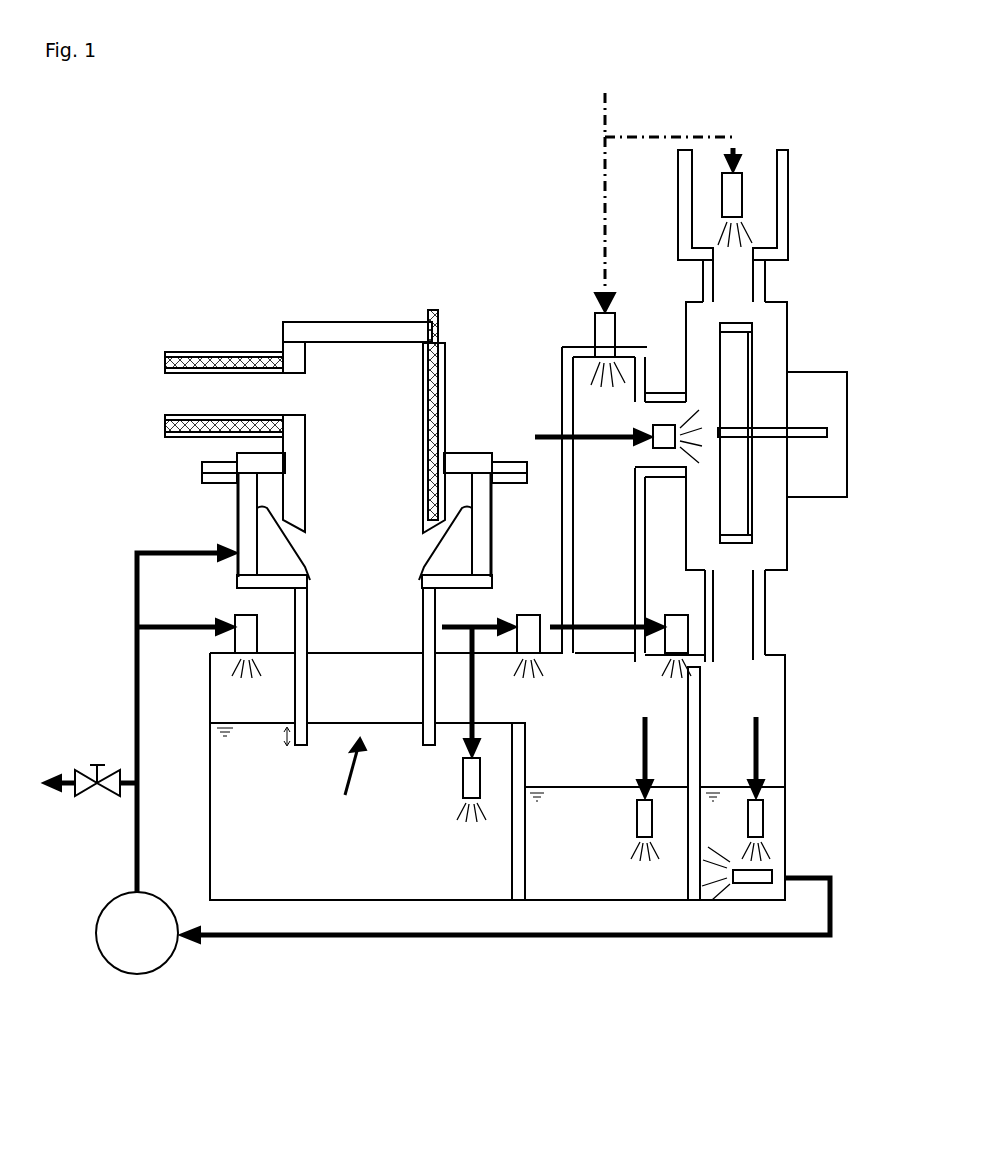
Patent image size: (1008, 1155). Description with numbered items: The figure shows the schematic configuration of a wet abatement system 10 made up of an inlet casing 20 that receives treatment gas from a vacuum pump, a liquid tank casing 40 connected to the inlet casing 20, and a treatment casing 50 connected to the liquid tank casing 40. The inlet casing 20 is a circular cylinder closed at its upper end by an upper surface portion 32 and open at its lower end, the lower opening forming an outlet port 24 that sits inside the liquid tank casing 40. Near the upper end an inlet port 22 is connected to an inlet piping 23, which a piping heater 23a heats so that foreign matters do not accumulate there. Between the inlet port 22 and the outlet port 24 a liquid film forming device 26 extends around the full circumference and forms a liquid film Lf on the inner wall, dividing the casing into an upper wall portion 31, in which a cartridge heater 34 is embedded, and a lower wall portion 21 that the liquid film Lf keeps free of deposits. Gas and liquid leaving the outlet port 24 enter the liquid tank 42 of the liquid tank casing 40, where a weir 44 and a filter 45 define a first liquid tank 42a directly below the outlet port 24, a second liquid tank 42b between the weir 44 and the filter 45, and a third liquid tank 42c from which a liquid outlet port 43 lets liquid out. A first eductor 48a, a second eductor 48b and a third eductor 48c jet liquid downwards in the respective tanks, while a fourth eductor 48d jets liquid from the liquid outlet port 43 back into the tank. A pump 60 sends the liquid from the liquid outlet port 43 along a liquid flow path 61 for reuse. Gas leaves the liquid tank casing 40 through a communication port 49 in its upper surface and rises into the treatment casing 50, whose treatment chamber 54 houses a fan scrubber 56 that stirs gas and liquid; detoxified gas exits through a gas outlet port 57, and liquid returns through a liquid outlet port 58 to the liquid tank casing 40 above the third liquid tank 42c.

The wet abatement system 10 is at (193, 207).
The inlet casing 20 is at (458, 332).
The wall portion 21 is at (295, 703).
The inlet port 22 is at (288, 398).
The inlet piping 23 is at (240, 365).
The piping heater 23a is at (190, 352).
The outlet port 24 is at (349, 784).
The liquid film forming device 26 is at (233, 507).
The wall portion 31 is at (447, 405).
The upper surface portion 32 is at (395, 322).
The cartridge heater 34 is at (433, 310).
The liquid tank casing 40 is at (793, 678).
The liquid tank 42 is at (636, 904).
The first liquid tank 42a is at (488, 875).
The second liquid tank 42b is at (590, 875).
The third liquid tank 42c is at (735, 885).
The liquid outlet port 43 is at (788, 880).
The weir 44 is at (527, 733).
The filter 45 is at (702, 700).
The first eductor 48a is at (458, 785).
The second eductor 48b is at (658, 818).
The third eductor 48c is at (770, 815).
The fourth eductor 48d is at (770, 867).
The communication port 49 is at (598, 657).
The treatment casing 50 is at (805, 235).
The treatment chamber 54 is at (790, 318).
The fan scrubber 56 is at (745, 517).
The gas outlet port 57 is at (737, 280).
The liquid outlet port 58 is at (740, 608).
The pump 60 is at (105, 905).
The liquid flow path 61 is at (133, 833).
The liquid film Lf is at (310, 605).